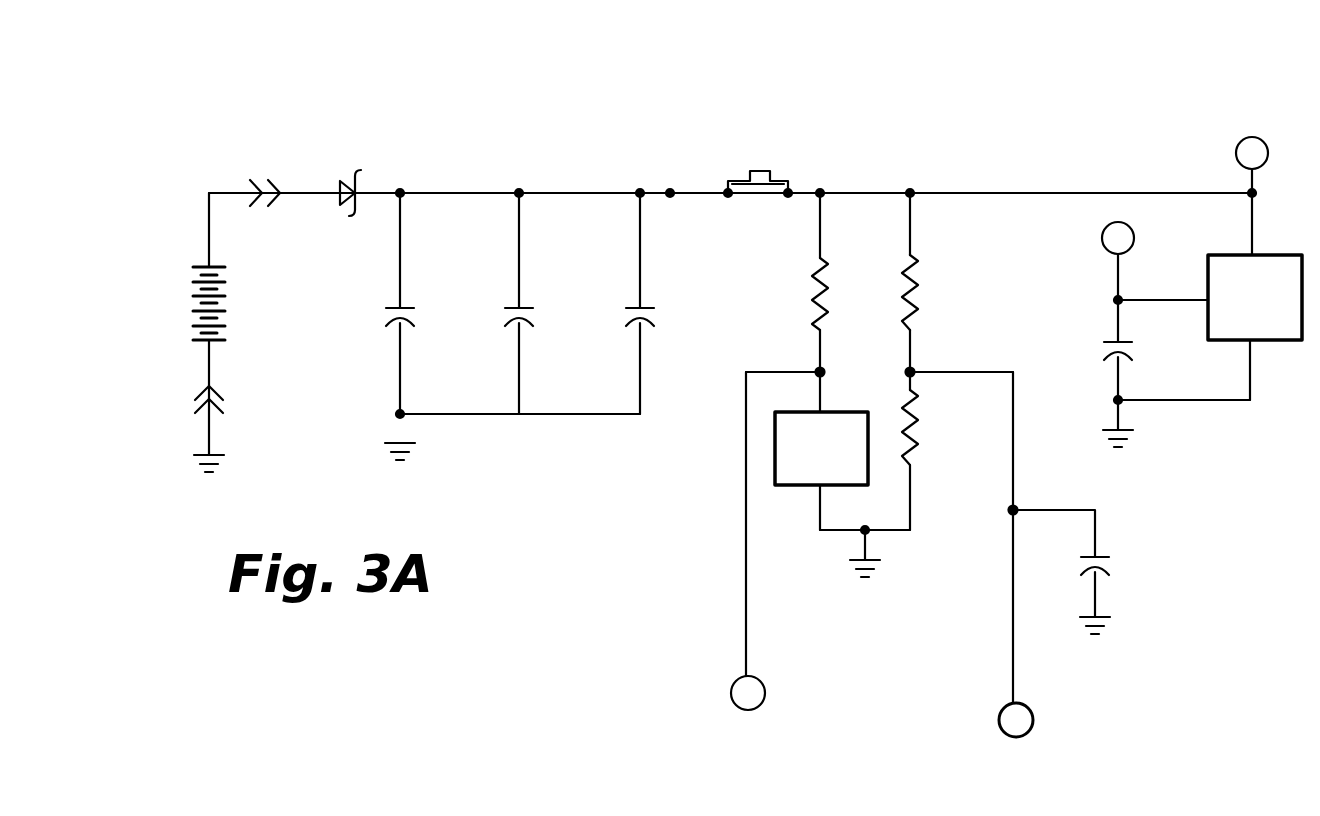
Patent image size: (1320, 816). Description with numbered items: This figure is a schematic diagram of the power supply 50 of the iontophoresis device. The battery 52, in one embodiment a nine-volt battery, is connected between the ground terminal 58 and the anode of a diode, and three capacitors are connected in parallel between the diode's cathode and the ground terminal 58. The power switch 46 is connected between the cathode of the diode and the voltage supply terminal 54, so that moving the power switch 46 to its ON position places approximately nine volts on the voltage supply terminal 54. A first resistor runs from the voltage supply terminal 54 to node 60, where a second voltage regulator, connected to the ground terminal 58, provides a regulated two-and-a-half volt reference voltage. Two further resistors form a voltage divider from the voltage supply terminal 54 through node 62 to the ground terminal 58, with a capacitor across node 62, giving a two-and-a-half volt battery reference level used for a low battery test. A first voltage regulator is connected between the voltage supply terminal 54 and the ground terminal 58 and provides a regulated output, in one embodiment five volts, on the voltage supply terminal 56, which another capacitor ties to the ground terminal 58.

The power supply 50 is at (962, 108).
The power switch 46 is at (762, 170).
The battery 52 is at (229, 313).
The voltage supply terminal 54 is at (1240, 141).
The voltage supply terminal 56 is at (1102, 239).
The ground terminal 58 is at (212, 438).
The node 60 is at (822, 370).
The node 62 is at (912, 370).